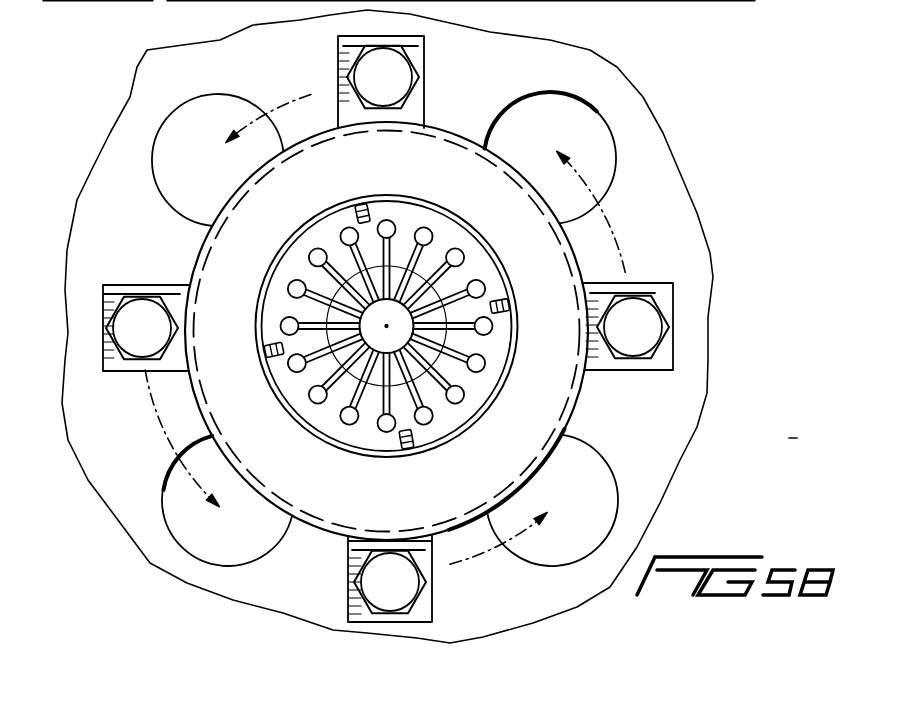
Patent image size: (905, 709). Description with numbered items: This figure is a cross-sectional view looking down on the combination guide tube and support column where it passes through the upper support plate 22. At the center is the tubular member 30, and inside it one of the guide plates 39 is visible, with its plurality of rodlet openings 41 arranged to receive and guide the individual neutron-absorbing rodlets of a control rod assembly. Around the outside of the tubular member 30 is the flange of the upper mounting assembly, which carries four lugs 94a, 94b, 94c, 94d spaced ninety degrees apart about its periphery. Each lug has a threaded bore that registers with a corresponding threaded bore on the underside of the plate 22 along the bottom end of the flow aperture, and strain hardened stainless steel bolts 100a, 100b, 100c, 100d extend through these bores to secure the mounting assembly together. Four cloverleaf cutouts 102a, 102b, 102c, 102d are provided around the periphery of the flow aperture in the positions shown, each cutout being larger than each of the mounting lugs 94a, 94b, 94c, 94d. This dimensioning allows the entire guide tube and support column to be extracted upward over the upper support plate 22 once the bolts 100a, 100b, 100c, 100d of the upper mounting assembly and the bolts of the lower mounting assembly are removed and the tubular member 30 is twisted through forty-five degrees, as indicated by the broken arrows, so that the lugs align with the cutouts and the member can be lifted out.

The upper support plate 22 is at (667, 230).
The tubular member 30 is at (515, 333).
The guide plates 39 is at (445, 422).
The rodlet openings 41 is at (333, 450).
The lug 94a is at (103, 360).
The lug 94b is at (423, 606).
The lug 94c is at (665, 297).
The lug 94d is at (418, 58).
The bolt 100a is at (140, 310).
The bolt 100b is at (373, 578).
The bolt 100c is at (637, 338).
The bolt 100d is at (392, 87).
The cloverleaf cutout 102a is at (158, 133).
The cloverleaf cutout 102b is at (170, 472).
The cloverleaf cutout 102c is at (598, 452).
The cloverleaf cutout 102d is at (598, 117).